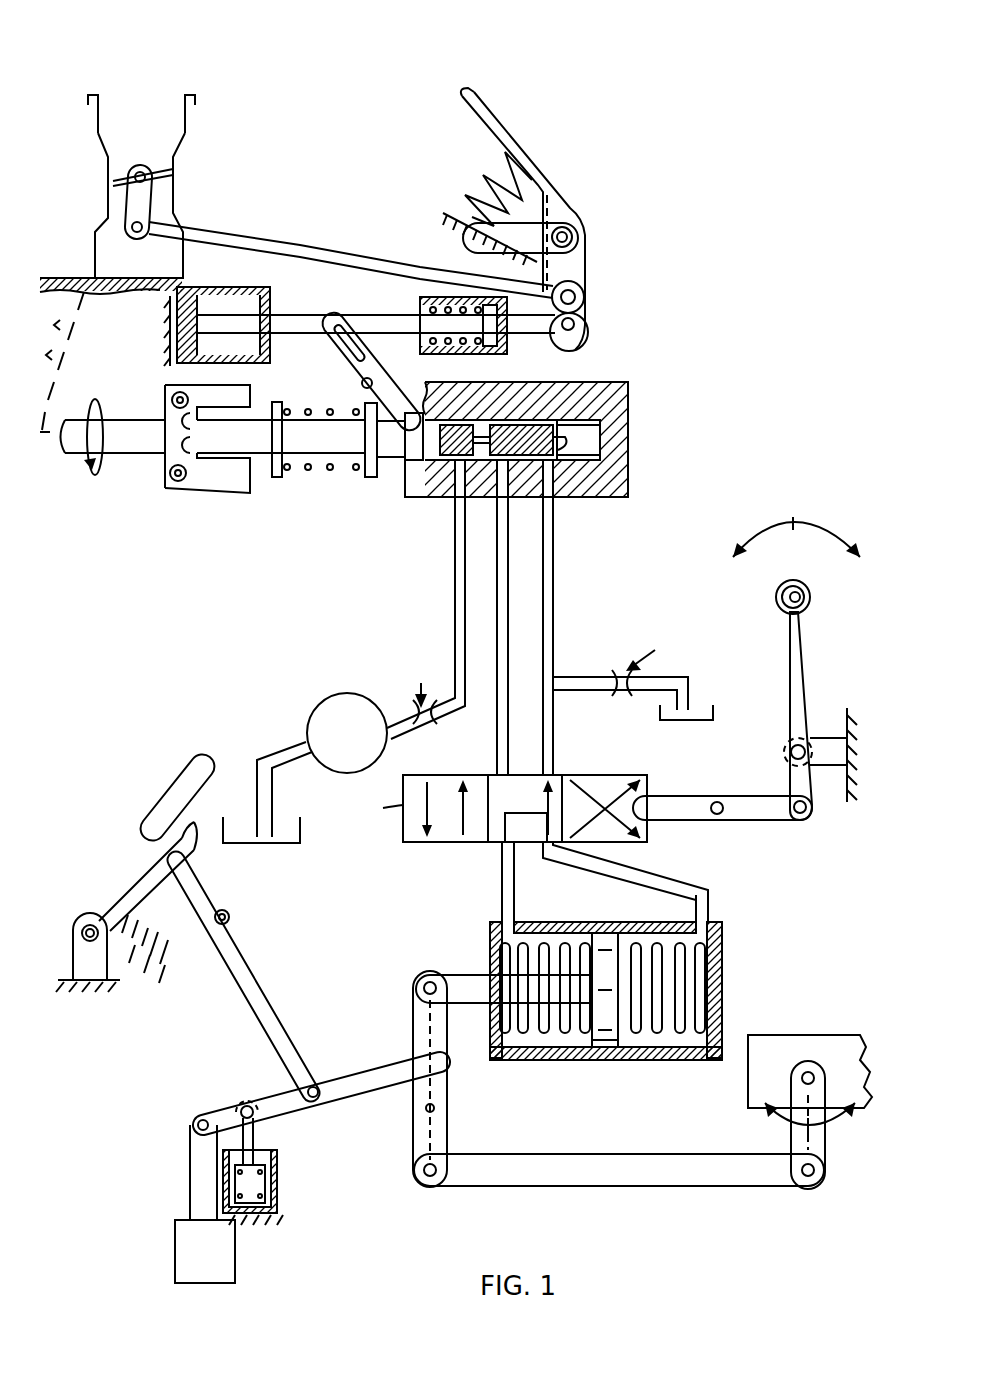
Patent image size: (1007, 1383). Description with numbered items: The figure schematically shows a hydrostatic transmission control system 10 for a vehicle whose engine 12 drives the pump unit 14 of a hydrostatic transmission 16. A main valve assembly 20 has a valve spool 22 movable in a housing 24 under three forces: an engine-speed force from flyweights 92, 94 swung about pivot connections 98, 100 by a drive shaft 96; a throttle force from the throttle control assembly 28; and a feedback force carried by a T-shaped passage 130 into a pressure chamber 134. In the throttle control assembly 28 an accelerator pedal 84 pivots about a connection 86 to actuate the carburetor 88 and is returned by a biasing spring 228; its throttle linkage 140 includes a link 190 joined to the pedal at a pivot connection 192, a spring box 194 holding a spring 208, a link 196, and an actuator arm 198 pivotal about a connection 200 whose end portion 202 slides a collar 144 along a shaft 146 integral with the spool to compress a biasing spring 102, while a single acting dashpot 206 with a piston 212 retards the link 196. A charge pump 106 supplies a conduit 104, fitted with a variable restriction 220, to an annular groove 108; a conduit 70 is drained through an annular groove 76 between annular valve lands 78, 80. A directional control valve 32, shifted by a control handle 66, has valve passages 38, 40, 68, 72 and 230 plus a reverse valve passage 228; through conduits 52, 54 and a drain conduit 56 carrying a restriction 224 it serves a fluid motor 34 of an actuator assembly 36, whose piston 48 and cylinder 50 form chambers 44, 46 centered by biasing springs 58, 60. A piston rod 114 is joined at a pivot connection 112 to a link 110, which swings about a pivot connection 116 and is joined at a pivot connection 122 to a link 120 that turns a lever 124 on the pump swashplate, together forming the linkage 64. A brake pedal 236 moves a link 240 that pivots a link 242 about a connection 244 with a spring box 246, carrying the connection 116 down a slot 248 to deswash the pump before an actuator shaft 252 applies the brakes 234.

The hydrostatic transmission control system 10 is at (776, 152).
The engine 12 is at (92, 278).
The pump unit 14 is at (840, 1045).
The hydrostatic transmission 16 is at (744, 1089).
The main valve assembly 20 is at (636, 385).
The valve spool 22 is at (559, 419).
The housing 24 is at (634, 421).
The throttle control assembly 28 is at (428, 92).
The directional control valve 32 is at (390, 838).
The fluid motor 34 is at (726, 981).
The actuator assembly 36 is at (834, 951).
The valve passage 38 is at (532, 814).
The valve passage 40 is at (526, 829).
The motor chamber 44 is at (528, 1062).
The motor chamber 46 is at (664, 1050).
The piston 48 is at (600, 1050).
The cylinder 50 is at (500, 1050).
The conduit 52 is at (502, 903).
The conduit 54 is at (672, 888).
The drain conduit 56 is at (598, 675).
The biasing spring 58 is at (570, 936).
The biasing spring 60 is at (722, 924).
The linkage 64 is at (313, 1036).
The control handle 66 is at (805, 673).
The valve passage 68 is at (633, 840).
The conduit 70 is at (497, 725).
The valve passage 72 is at (612, 776).
The annular groove 76 is at (540, 424).
The annular valve land 78 is at (478, 420).
The annular valve land 80 is at (562, 424).
The accelerator pedal 84 is at (508, 148).
The pivot connection 86 is at (573, 237).
The engine carburetor 88 is at (190, 142).
The flyweight 92 is at (245, 396).
The flyweight 94 is at (240, 493).
The drive shaft 96 is at (72, 462).
The pivot connection 98 is at (170, 398).
The pivot connection 100 is at (170, 478).
The biasing spring 102 is at (278, 477).
The fluid supply conduit 104 is at (410, 694).
The charge pump 106 is at (325, 749).
The annular groove 108 is at (452, 498).
The link 110 is at (413, 1012).
The pivot connection 112 is at (422, 980).
The piston rod 114 is at (458, 975).
The pivot connection 116 is at (413, 1050).
The link 120 is at (640, 1188).
The pivot connection 122 is at (422, 1188).
The lever 124 is at (822, 1172).
The T-shaped passage 130 is at (556, 452).
The pressure chamber 134 is at (600, 442).
The throttle linkage 140 is at (406, 302).
The collar 144 is at (412, 462).
The shaft 146 is at (285, 452).
The link 190 is at (585, 293).
The pivot connection 192 is at (575, 325).
The spring box 194 is at (500, 248).
The link 196 is at (356, 300).
The actuator arm 198 is at (380, 376).
The pivot connection 200 is at (358, 386).
The end portion 202 is at (370, 477).
The single acting dashpot 206 is at (258, 285).
The spring 208 is at (474, 355).
The piston 212 is at (170, 322).
The variable restriction 220 is at (437, 733).
The restriction 224 is at (654, 663).
The biasing spring 228 is at (484, 170).
The valve passage 230 is at (468, 842).
The vehicle brakes 234 is at (186, 1283).
The brake pedal 236 is at (166, 785).
The link 240 is at (248, 998).
The link 242 is at (346, 1102).
The connection 244 is at (252, 1106).
The spring box 246 is at (277, 1183).
The slot 248 is at (426, 1108).
The actuator shaft 252 is at (190, 1163).